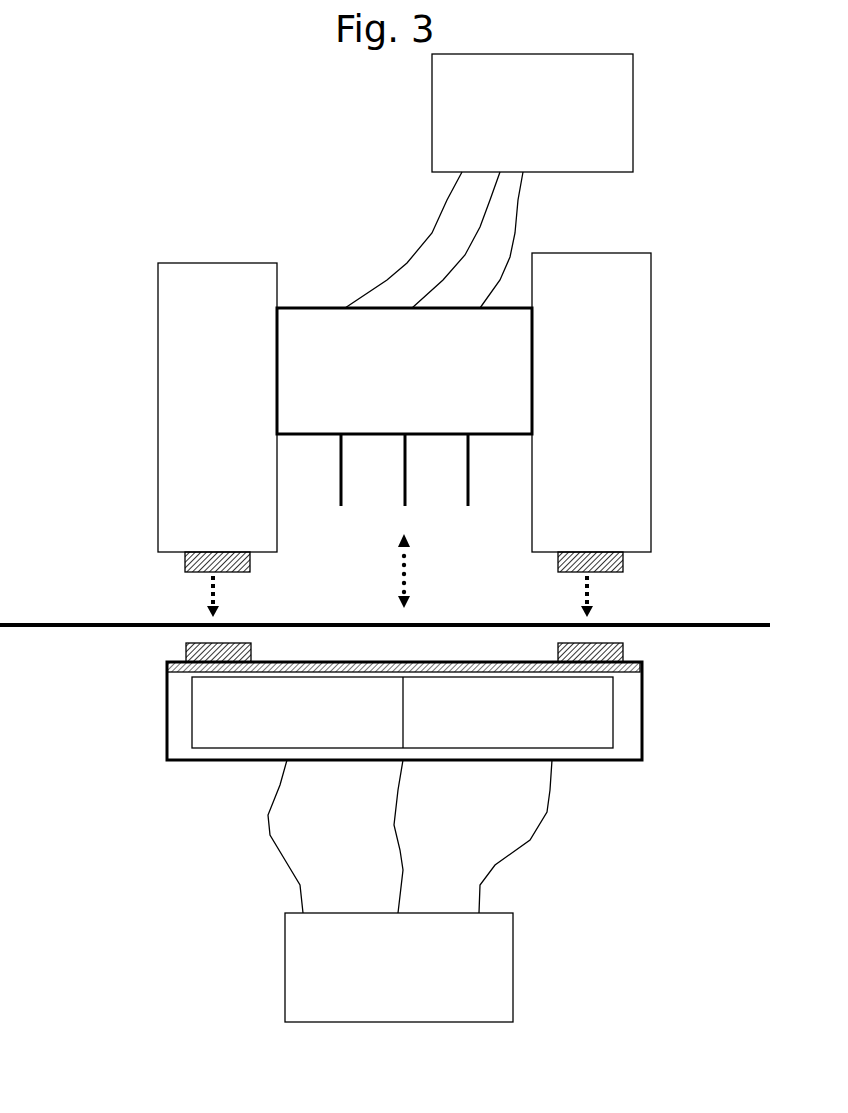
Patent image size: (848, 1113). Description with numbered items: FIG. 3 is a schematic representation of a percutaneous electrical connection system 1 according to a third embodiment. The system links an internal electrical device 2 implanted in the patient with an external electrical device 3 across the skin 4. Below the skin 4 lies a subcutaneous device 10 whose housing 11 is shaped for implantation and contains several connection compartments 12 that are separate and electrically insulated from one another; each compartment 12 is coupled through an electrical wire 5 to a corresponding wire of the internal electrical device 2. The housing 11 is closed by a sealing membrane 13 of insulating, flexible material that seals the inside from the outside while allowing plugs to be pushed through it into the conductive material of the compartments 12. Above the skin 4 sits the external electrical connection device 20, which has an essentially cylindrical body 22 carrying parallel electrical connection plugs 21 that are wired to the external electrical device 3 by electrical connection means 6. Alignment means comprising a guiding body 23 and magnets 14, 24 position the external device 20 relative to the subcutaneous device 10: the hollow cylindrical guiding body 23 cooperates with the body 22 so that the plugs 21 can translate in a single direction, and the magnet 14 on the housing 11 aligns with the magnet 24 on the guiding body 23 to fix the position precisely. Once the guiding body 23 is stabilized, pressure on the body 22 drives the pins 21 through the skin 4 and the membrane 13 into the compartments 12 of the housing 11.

The electrical connection system 1 is at (152, 214).
The internal electrical device 2 is at (513, 973).
The external electrical device 3 is at (633, 100).
The skin 4 is at (725, 622).
The electrical wire 5 is at (393, 830).
The electrical connection means 6 is at (488, 207).
The subcutaneous device 10 is at (144, 697).
The housing 11 is at (163, 750).
The connection compartment 12 is at (375, 725).
The sealing membrane 13 is at (638, 672).
The magnet 14 is at (623, 652).
The external electrical connection device 20 is at (136, 317).
The electrical connection plug 21 is at (405, 498).
The body 22 is at (485, 388).
The guiding body 23 is at (632, 308).
The magnet 24 is at (193, 562).